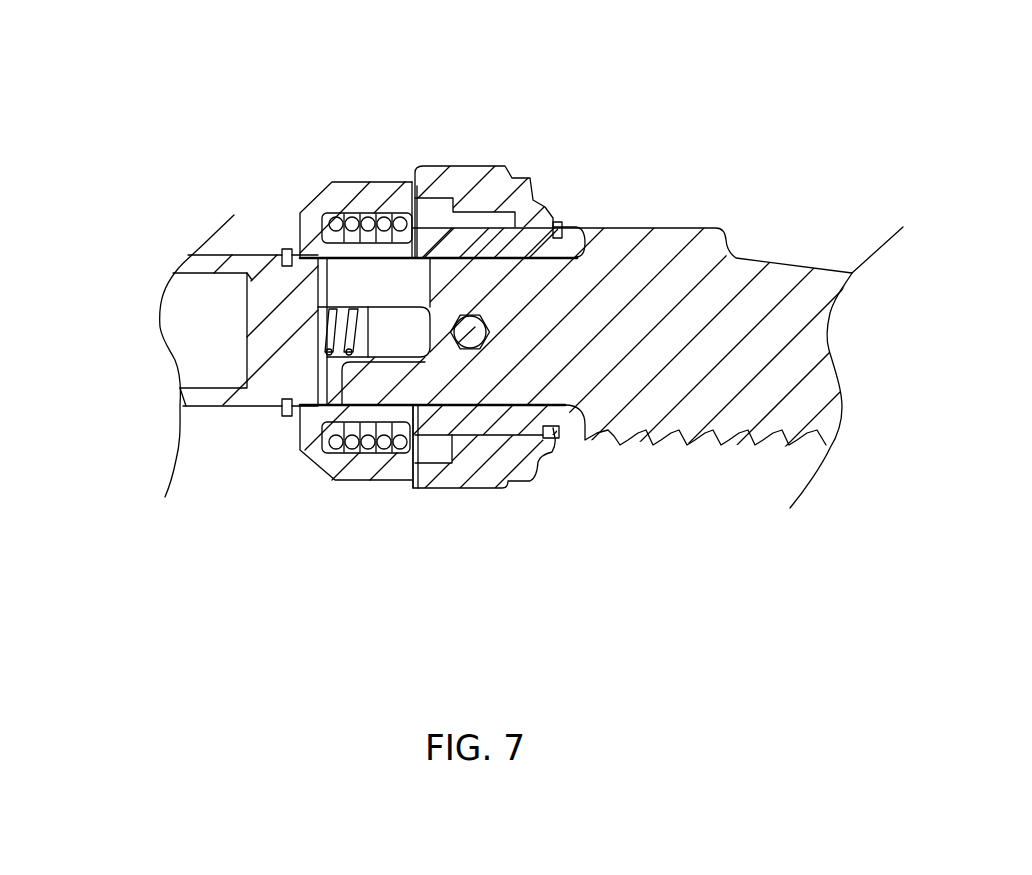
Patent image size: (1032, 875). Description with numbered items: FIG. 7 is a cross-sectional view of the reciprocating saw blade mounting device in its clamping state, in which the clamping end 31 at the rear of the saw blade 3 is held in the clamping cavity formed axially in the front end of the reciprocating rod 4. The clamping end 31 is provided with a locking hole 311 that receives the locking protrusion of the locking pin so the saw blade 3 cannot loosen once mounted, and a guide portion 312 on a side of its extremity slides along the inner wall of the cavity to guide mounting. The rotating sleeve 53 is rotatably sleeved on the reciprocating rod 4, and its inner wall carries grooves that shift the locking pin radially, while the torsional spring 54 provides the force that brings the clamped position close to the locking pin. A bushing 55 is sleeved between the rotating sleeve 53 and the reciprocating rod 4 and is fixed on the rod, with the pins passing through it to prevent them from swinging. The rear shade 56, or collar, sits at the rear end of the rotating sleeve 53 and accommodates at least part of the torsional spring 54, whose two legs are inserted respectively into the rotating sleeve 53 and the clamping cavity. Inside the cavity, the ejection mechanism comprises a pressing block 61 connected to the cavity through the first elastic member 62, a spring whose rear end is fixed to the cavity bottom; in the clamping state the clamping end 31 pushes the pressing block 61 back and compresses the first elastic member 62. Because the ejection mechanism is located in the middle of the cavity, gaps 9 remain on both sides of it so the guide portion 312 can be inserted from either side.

The saw blade 3 is at (785, 313).
The reciprocating rod 4 is at (275, 256).
The gaps 9 is at (340, 214).
The clamping end 31 is at (510, 310).
The locking hole 311 is at (459, 345).
The guide portion 312 is at (365, 406).
The rotating sleeve 53 is at (533, 197).
The torsional spring 54 is at (378, 288).
The bushing 55 is at (510, 416).
The rear shade 56 is at (345, 462).
The pressing block 61 is at (408, 326).
The first elastic member 62 is at (325, 325).